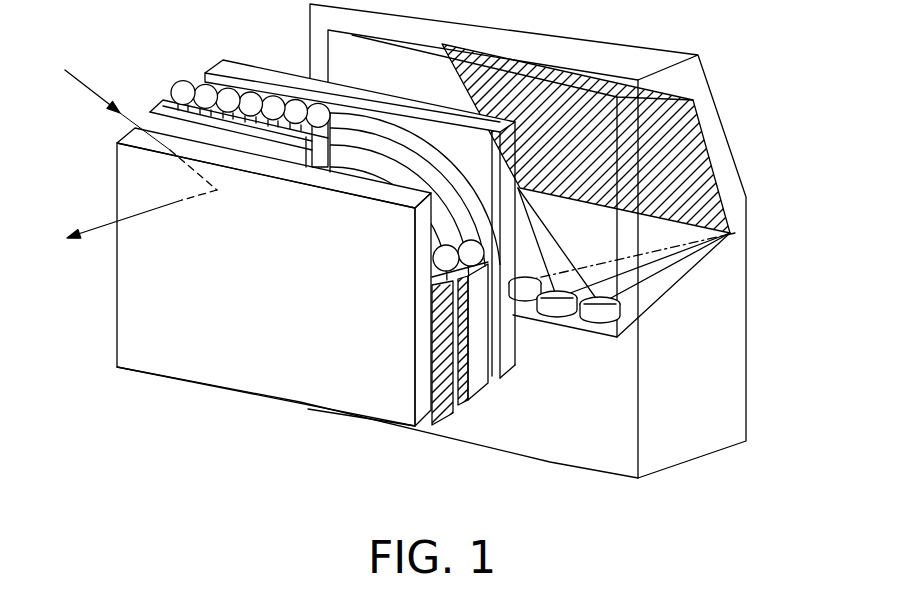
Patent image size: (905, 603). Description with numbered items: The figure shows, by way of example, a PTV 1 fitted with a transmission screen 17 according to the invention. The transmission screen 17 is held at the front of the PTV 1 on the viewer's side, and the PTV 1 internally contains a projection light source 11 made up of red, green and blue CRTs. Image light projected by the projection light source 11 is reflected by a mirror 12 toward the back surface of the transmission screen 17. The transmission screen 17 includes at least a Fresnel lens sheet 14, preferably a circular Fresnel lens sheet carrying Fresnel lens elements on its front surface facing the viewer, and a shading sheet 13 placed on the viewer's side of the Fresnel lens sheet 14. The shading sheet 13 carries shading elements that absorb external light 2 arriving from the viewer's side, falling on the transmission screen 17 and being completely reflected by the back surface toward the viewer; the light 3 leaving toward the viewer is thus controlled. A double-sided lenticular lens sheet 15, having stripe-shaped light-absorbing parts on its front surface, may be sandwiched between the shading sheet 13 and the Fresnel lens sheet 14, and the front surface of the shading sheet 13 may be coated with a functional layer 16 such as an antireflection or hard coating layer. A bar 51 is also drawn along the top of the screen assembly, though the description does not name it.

The PTV 1 is at (764, 338).
The external light 2 is at (72, 100).
The emitted light 3 is at (100, 232).
The projection light source 11 is at (555, 312).
The mirror 12 is at (680, 160).
The shading sheet 13 is at (442, 402).
The Fresnel lens sheet 14 is at (507, 366).
The double-sided lenticular lens sheet 15 is at (480, 384).
The functional layer 16 is at (345, 402).
The transmission screen 17 is at (233, 101).
The holder bar 51 is at (271, 66).